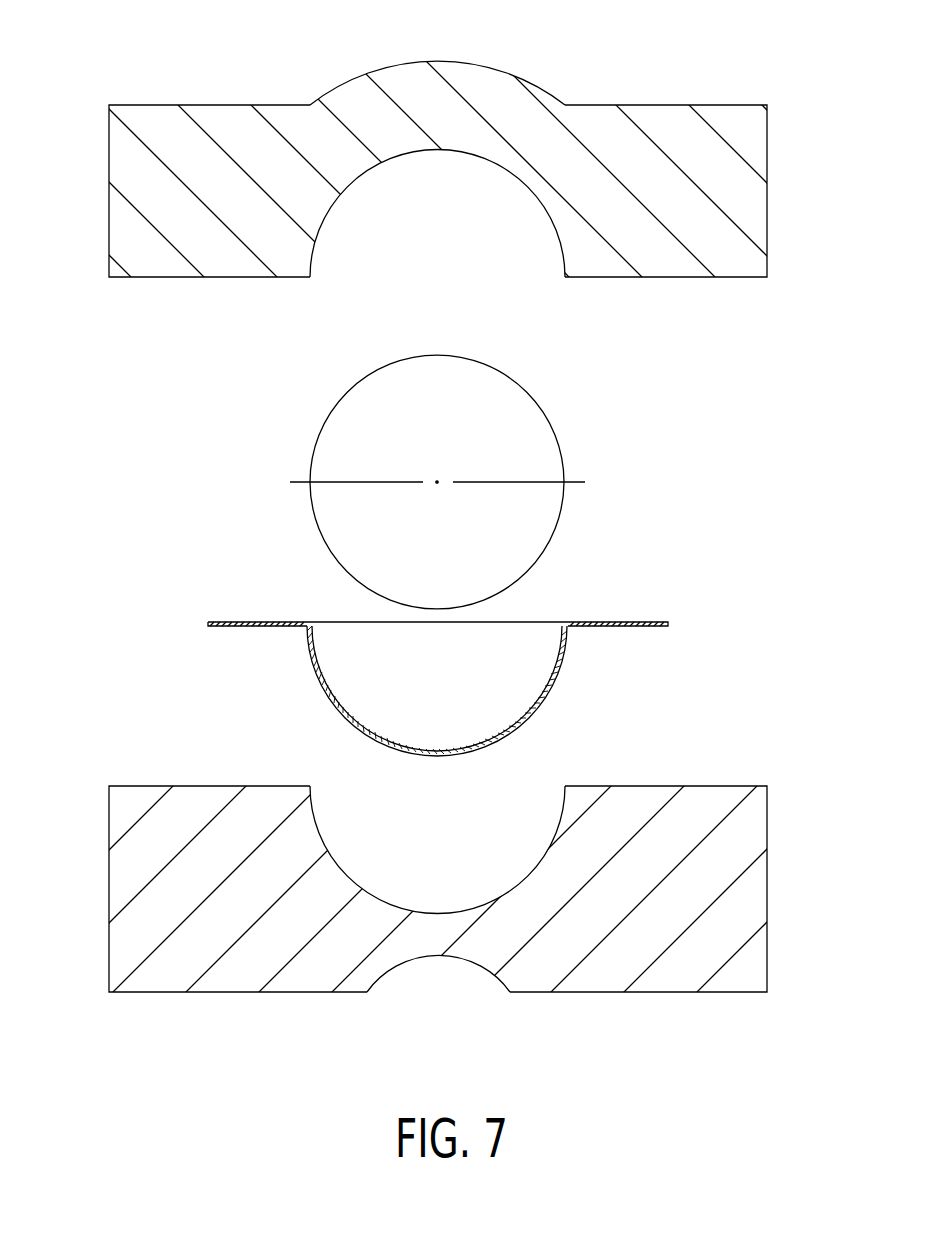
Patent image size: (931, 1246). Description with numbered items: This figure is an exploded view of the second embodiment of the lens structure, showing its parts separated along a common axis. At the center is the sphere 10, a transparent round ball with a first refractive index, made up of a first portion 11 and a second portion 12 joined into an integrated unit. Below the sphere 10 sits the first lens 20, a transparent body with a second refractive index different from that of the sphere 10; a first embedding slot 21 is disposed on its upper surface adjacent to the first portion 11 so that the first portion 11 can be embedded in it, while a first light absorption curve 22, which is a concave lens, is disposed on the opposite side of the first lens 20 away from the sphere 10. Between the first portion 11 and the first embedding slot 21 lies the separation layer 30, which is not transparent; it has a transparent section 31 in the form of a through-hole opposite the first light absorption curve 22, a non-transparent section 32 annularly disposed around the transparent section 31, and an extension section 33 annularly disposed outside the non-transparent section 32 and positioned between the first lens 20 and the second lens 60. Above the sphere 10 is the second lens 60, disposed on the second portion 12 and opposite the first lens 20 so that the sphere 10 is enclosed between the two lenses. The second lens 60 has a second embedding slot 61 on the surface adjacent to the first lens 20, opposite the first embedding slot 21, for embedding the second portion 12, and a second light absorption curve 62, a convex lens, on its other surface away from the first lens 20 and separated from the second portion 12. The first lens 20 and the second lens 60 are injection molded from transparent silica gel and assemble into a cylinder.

The sphere 10 is at (438, 485).
The first portion 11 is at (538, 563).
The second portion 12 is at (540, 408).
The first lens 20 is at (465, 880).
The first embedding slot 21 is at (352, 818).
The first light absorption curve 22 is at (470, 960).
The separation layer 30 is at (427, 655).
The transparent section 31 is at (490, 745).
The non-transparent section 32 is at (560, 668).
The extension section 33 is at (258, 622).
The second lens 60 is at (465, 174).
The second embedding slot 61 is at (367, 240).
The second light absorption curve 62 is at (483, 63).